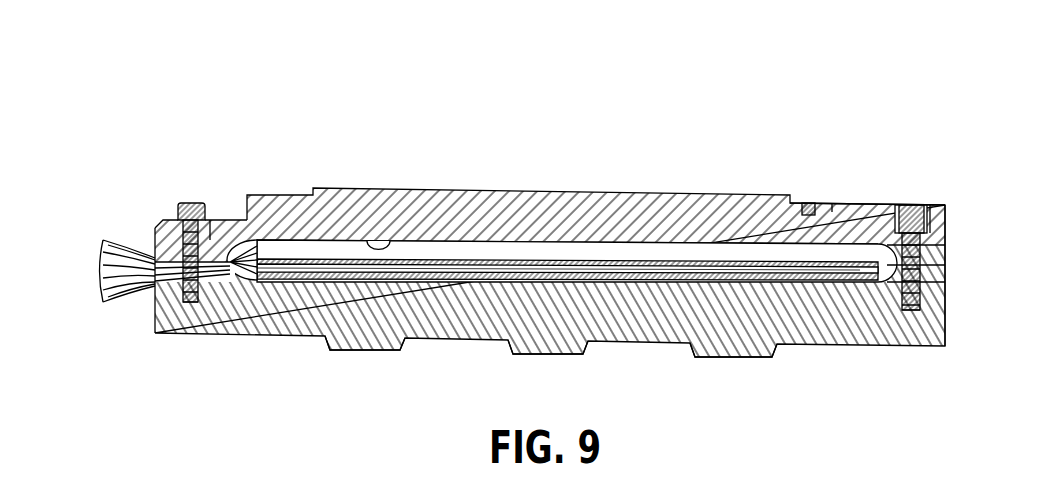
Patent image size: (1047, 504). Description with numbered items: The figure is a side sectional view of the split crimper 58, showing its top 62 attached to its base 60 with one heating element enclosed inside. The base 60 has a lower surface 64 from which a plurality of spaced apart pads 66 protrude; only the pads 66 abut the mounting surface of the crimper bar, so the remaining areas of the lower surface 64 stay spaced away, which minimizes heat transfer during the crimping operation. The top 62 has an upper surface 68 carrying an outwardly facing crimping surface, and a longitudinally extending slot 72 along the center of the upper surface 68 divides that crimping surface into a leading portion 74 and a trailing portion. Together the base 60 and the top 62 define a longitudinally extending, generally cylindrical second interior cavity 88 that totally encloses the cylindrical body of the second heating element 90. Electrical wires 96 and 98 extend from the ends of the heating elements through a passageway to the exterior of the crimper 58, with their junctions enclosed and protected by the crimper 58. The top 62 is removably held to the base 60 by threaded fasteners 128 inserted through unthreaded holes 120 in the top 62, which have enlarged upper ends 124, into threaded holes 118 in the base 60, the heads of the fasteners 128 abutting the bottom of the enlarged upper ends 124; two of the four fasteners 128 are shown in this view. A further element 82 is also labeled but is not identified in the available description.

The split crimper 58 is at (168, 58).
The base 60 is at (947, 300).
The top 62 is at (947, 240).
The lower surface 64 is at (457, 340).
The pads 66 is at (365, 350).
The upper surface 68 is at (728, 357).
The slot 72 is at (555, 497).
The leading portion 74 is at (545, 191).
The set screw 82 is at (812, 203).
The second interior cavity 88 is at (390, 238).
The second heating element 90 is at (440, 250).
The electrical wires 96 is at (110, 306).
The electrical wires 98 is at (113, 247).
The threaded holes 118 is at (163, 303).
The unthreaded holes 120 is at (154, 230).
The enlarged upper ends 124 is at (213, 222).
The threaded fasteners 128 is at (192, 200).